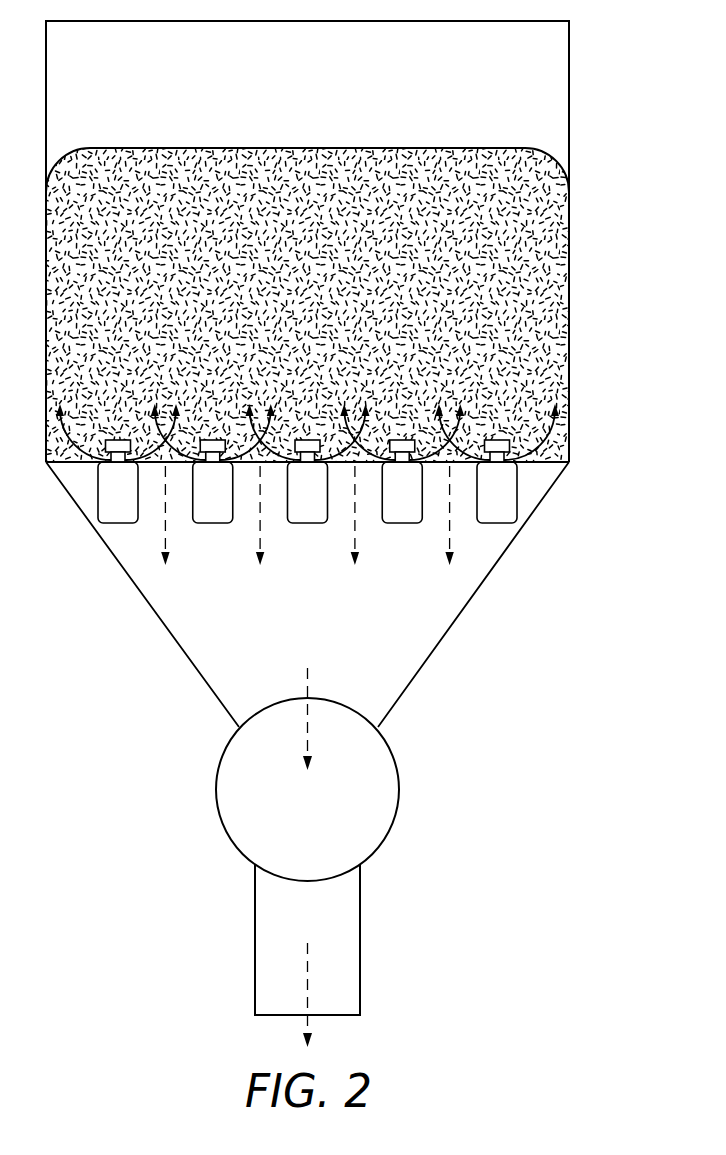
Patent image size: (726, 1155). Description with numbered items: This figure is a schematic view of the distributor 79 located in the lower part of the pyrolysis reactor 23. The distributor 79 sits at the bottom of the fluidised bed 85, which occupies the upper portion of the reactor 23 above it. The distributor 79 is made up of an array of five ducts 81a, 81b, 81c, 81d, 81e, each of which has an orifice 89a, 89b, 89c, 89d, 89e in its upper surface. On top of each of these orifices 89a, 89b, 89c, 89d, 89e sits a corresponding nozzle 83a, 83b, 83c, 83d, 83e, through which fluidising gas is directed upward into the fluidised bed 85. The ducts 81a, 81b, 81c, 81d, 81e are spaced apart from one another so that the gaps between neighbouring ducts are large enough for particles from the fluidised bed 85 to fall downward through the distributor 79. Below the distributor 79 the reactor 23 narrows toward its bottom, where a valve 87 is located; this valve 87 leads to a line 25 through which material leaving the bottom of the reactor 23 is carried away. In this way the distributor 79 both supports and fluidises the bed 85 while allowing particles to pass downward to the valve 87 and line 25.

The reactor 23 is at (570, 30).
The line 25 is at (361, 1000).
The distributor 79 is at (595, 460).
The duct 81a is at (108, 515).
The duct 81b is at (215, 515).
The duct 81c is at (310, 515).
The duct 81d is at (405, 515).
The duct 81e is at (507, 515).
The nozzle 83a is at (116, 446).
The nozzle 83b is at (210, 446).
The nozzle 83c is at (305, 446).
The nozzle 83d is at (400, 446).
The nozzle 83e is at (494, 446).
The fluidised bed 85 is at (305, 160).
The valve 87 is at (400, 790).
The orifice 89a is at (114, 462).
The orifice 89b is at (213, 462).
The orifice 89c is at (308, 462).
The orifice 89d is at (402, 462).
The orifice 89e is at (501, 463).